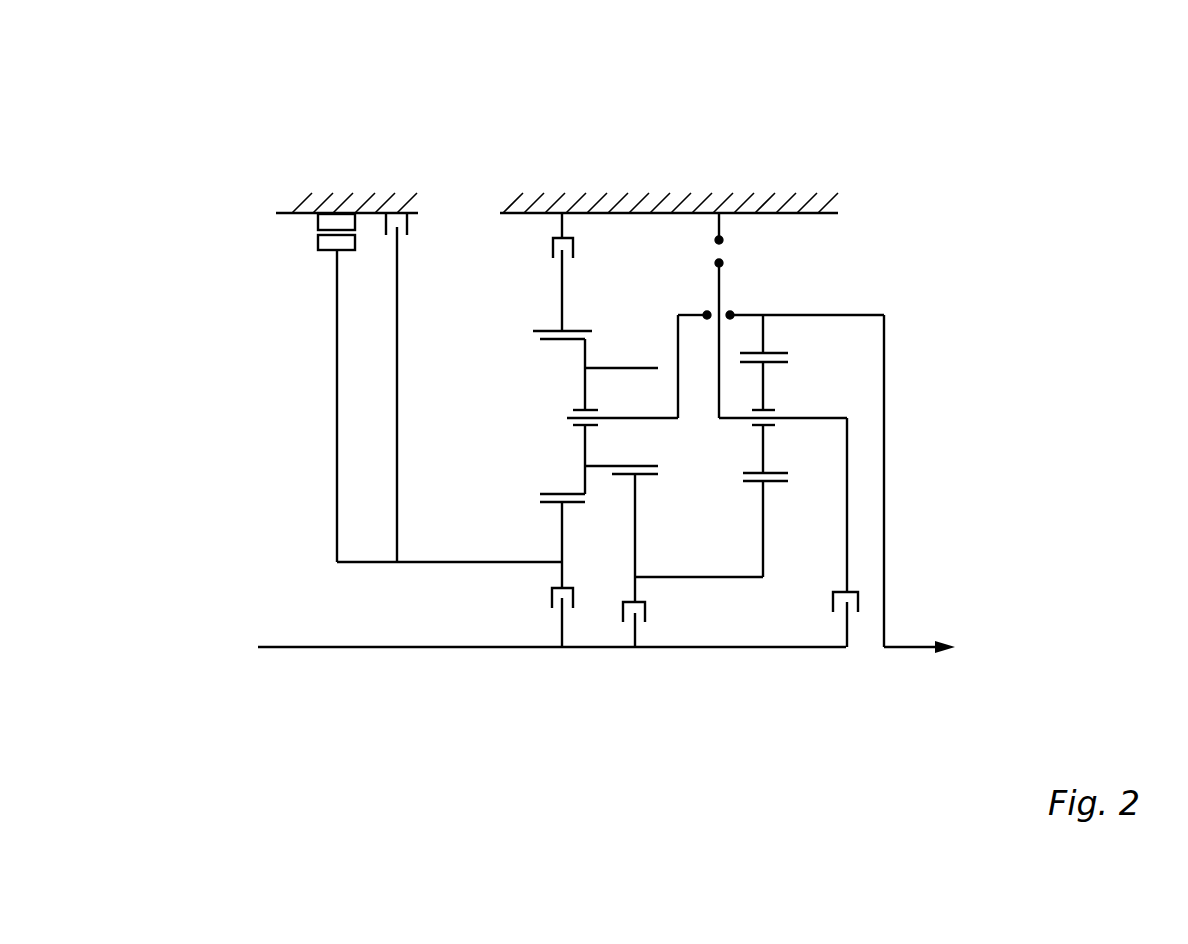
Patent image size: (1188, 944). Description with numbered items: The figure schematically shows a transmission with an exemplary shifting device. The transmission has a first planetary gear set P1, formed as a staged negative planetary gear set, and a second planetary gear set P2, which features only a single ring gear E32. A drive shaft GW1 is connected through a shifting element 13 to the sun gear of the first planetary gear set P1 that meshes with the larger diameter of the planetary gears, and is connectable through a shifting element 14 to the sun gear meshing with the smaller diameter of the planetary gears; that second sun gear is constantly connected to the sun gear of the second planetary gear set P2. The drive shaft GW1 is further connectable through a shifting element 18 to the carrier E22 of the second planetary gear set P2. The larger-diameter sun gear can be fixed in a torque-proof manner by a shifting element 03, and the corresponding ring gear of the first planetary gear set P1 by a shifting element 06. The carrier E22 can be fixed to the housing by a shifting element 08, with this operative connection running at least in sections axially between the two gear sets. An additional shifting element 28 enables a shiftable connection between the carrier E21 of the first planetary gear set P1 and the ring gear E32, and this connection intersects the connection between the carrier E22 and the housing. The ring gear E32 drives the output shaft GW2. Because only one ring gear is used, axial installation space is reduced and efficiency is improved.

The shifting element 03 is at (418, 230).
The shifting element 06 is at (578, 251).
The first planetary gear set P1 is at (594, 398).
The additional shifting element 28 is at (704, 307).
The shifting element 08 is at (739, 251).
The ring gear E32 is at (777, 348).
The second planetary gear set P2 is at (779, 398).
The carrier E22 is at (819, 417).
The carrier E21 is at (666, 424).
The shifting element 13 is at (553, 615).
The shifting element 14 is at (627, 628).
The shifting element 18 is at (840, 618).
The drive shaft GW1 is at (418, 650).
The output shaft GW2 is at (905, 652).